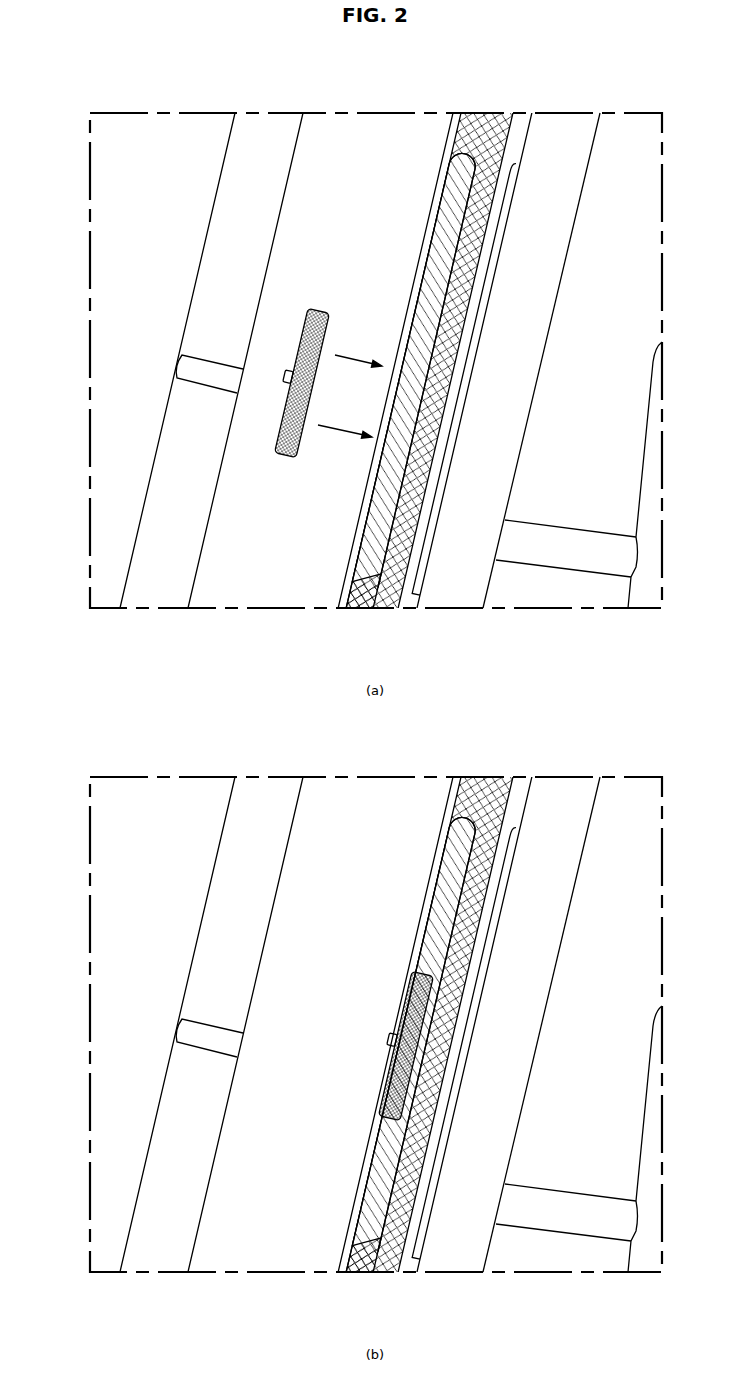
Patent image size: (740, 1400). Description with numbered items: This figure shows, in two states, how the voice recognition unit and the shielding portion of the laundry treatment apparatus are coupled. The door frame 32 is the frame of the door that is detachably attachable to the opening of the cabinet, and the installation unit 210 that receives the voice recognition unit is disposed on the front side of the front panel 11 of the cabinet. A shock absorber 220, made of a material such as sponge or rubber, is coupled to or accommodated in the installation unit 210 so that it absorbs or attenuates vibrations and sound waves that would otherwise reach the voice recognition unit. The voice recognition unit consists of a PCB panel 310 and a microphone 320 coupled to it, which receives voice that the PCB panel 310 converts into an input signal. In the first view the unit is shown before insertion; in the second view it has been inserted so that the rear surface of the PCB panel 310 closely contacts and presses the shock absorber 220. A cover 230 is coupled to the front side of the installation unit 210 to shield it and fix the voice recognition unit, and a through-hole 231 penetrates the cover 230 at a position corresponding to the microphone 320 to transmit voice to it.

The front panel 11 is at (562, 123).
The door frame 32 is at (503, 123).
The installation unit 210 is at (365, 568).
The shock absorber 220 is at (462, 188).
The cover 230 is at (237, 289).
The through-hole 231 is at (208, 370).
The PCB panel 310 is at (320, 308).
The microphone 320 is at (285, 378).